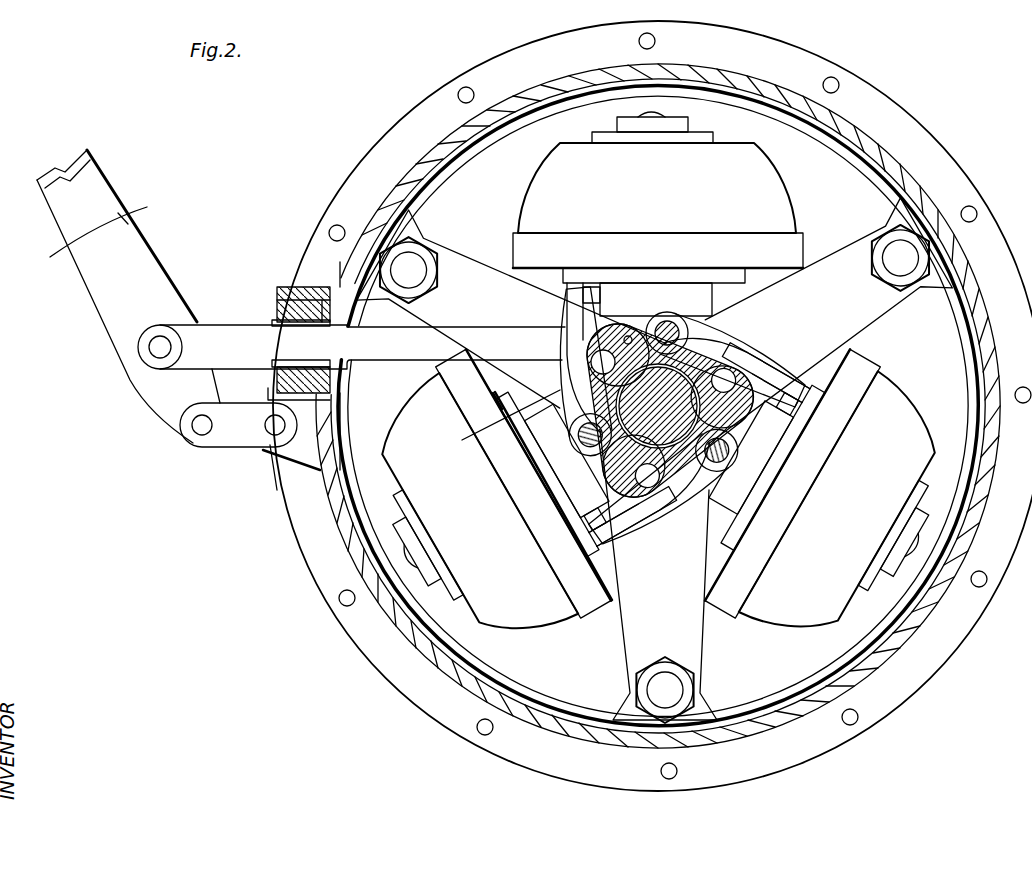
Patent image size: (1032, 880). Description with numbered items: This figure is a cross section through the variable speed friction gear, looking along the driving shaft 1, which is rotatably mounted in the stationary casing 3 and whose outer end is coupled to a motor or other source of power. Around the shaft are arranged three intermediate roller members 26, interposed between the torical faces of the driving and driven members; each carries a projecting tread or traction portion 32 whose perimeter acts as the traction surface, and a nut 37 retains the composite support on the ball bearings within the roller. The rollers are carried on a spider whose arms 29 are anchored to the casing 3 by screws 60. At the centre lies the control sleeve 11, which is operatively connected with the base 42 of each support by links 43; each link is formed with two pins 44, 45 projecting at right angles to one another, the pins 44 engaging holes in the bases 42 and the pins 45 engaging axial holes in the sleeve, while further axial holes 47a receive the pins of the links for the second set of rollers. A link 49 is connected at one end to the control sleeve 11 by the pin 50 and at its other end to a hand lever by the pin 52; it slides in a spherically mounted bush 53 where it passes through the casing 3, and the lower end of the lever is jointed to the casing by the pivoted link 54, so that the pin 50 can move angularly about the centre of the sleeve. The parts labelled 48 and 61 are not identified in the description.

The driving shaft 1 is at (666, 430).
The stationary casing 3 is at (993, 360).
The control sleeve 11 is at (498, 422).
The intermediate roller members 26 is at (658, 401).
The arms of the spider 29 is at (672, 632).
The tread or traction portion 32 is at (658, 425).
The nut 37 is at (660, 127).
The base of the support 42 is at (757, 530).
The links 43 is at (568, 358).
The pins 44 is at (567, 298).
The pins 45 is at (683, 330).
The axial holes 47a is at (748, 376).
The eccentric lobe 48 is at (593, 345).
The link 49 is at (232, 338).
The pin 50 is at (628, 333).
The pin 52 is at (165, 343).
The spherically mounted bush 53 is at (277, 322).
The pivoted link 54 is at (234, 425).
The screws 60 is at (668, 693).
The lever 61 is at (123, 255).